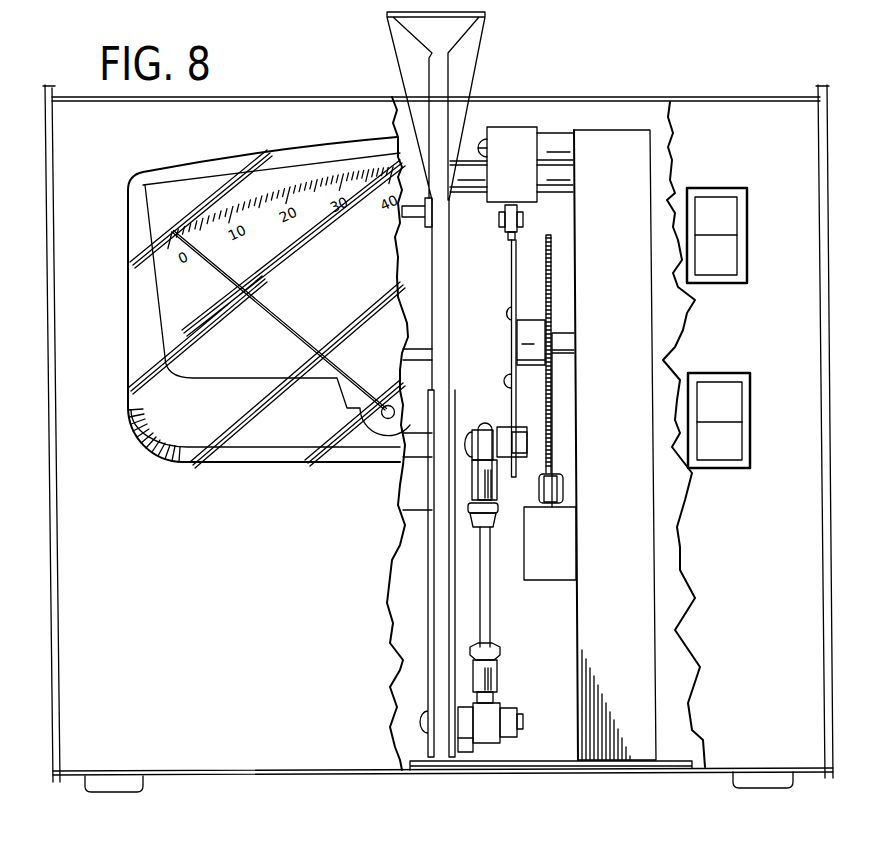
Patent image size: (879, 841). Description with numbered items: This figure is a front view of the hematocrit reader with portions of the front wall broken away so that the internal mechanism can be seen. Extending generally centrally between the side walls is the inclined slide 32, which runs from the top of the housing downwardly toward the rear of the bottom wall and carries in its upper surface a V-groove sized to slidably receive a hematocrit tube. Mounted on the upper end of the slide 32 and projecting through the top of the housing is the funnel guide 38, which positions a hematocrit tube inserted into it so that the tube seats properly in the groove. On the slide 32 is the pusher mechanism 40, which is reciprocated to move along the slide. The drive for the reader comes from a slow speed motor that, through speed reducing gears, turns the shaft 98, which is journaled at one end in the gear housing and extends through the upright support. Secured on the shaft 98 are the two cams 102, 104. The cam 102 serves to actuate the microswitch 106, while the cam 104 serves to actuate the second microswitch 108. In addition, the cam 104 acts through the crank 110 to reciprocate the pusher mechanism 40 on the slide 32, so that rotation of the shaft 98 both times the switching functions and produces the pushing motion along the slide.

The inclined slide 32 is at (438, 258).
The funnel guide 38 is at (468, 62).
The pusher mechanism 40 is at (433, 660).
The shaft 98 is at (561, 332).
The cam 102 is at (549, 253).
The cam 104 is at (513, 268).
The microswitch 106 is at (545, 563).
The second microswitch 108 is at (520, 143).
The crank 110 is at (488, 622).